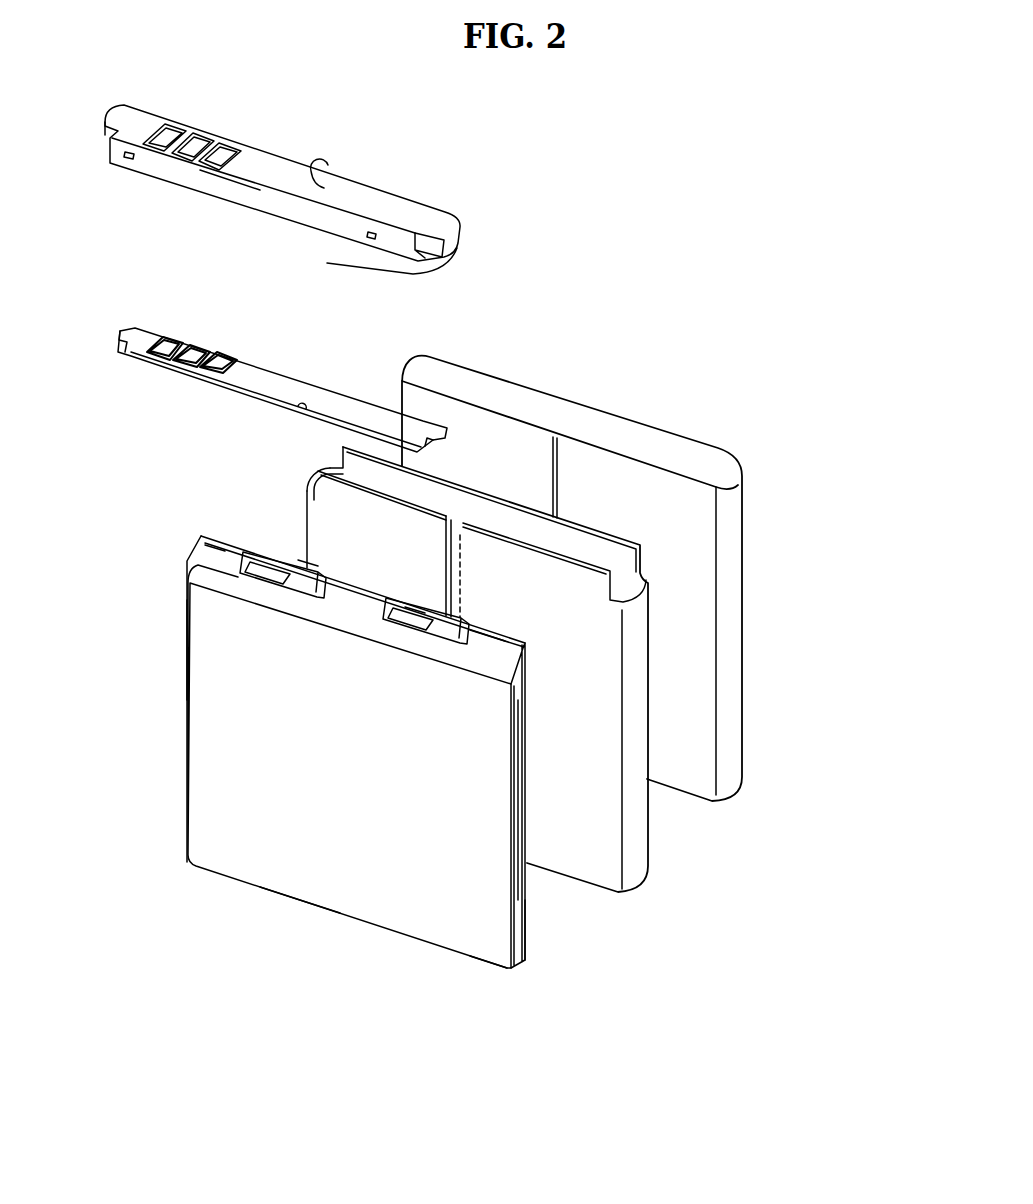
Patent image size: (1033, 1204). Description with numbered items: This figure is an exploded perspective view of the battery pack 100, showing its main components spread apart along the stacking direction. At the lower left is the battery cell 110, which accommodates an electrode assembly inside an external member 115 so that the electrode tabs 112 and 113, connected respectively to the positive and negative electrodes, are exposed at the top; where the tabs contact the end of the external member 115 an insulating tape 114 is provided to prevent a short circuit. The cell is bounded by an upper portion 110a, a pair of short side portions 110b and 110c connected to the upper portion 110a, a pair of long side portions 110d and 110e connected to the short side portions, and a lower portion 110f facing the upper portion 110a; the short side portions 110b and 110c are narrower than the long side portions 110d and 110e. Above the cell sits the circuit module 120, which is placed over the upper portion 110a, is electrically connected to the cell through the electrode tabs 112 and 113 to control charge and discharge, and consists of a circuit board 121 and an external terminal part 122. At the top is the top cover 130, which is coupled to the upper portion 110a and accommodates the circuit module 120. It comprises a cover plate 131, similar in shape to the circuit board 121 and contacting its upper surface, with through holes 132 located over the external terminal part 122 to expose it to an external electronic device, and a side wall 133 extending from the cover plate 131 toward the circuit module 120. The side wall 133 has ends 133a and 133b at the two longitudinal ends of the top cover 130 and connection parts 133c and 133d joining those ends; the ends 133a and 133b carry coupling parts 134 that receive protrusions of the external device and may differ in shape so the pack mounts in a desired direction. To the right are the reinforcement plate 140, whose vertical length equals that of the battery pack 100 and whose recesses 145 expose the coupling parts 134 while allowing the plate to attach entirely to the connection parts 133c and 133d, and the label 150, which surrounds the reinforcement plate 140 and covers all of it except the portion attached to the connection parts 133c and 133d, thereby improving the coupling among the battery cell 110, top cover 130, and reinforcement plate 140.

The battery pack 100 is at (653, 156).
The battery cell 110 is at (181, 546).
The upper portion 110a is at (215, 560).
The short side portion 110b is at (519, 782).
The short side portion 110c is at (187, 598).
The long side portion 110d is at (480, 957).
The long side portion 110e is at (527, 916).
The lower portion 110f is at (300, 903).
The electrode tab 112 is at (253, 563).
The electrode tab 113 is at (393, 607).
The insulating tape 114 is at (303, 563).
The external member 115 is at (502, 635).
The circuit module 120 is at (117, 329).
The circuit board 121 is at (258, 370).
The external terminal part 122 is at (175, 343).
The top cover 130 is at (474, 192).
The cover plate 131 is at (272, 160).
The through holes 132 is at (205, 126).
The side wall 133 is at (144, 232).
The end 133a is at (98, 140).
The end 133b is at (327, 263).
The connection part 133c is at (237, 198).
The connection part 133d is at (326, 171).
The coupling part 134 is at (430, 236).
The reinforcement plate 140 is at (657, 838).
The recess 145 is at (321, 459).
The label 150 is at (738, 574).